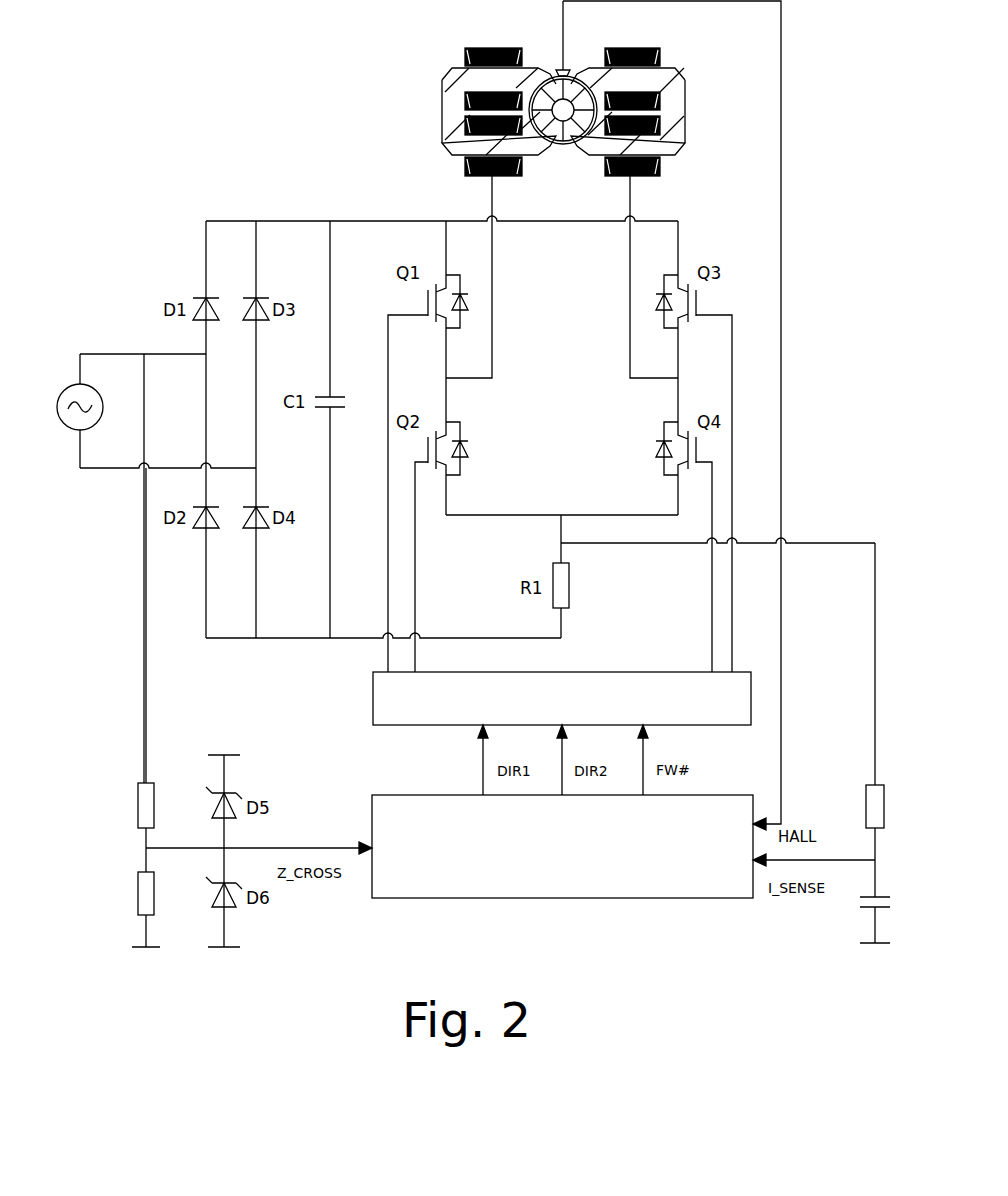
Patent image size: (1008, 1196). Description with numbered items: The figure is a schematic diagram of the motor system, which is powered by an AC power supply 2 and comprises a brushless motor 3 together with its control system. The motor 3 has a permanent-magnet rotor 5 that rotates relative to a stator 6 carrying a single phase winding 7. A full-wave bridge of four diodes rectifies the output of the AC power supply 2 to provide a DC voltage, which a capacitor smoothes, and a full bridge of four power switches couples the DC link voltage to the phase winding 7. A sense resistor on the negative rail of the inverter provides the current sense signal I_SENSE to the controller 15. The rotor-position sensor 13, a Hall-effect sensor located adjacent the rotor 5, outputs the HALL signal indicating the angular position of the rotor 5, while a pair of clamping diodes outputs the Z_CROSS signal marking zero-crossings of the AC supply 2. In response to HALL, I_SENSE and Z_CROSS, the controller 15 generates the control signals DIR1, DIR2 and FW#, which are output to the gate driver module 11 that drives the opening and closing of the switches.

The AC power supply 2 is at (70, 428).
The brushless motor 3 is at (437, 44).
The permanent-magnet rotor 5 is at (561, 148).
The stator 6 is at (442, 106).
The single phase winding 7 is at (494, 46).
The gate driver module 11 is at (373, 697).
The rotor-position sensor 13 is at (560, 66).
The controller 15 is at (634, 898).